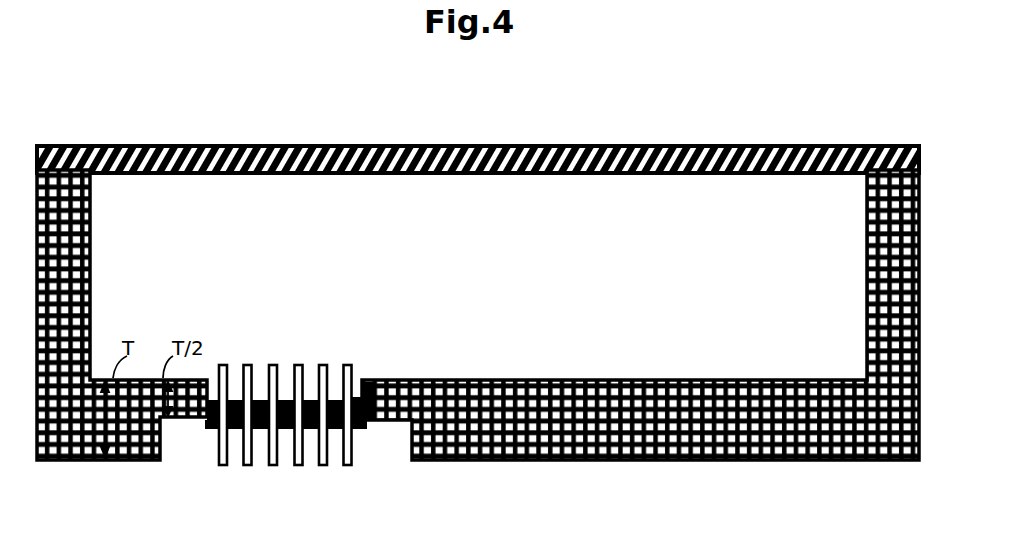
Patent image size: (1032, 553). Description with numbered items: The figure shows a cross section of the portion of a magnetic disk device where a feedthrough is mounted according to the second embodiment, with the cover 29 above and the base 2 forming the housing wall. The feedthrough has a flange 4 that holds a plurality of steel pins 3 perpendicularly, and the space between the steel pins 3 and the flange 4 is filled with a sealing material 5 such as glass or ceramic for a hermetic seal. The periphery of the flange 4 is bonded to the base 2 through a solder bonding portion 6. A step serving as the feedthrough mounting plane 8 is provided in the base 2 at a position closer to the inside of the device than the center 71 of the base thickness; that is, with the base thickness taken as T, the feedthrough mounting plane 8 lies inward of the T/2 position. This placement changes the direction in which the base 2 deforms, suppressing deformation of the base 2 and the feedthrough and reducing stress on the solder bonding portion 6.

The cover 29 is at (593, 146).
The base 2 is at (540, 402).
The steel pins 3 is at (348, 363).
The flange 4 is at (212, 430).
The sealing material 5 is at (348, 430).
The solder bonding portion 6 is at (378, 422).
The feedthrough mounting plane 8 is at (372, 386).
The center of thickness of the base 71 is at (126, 459).